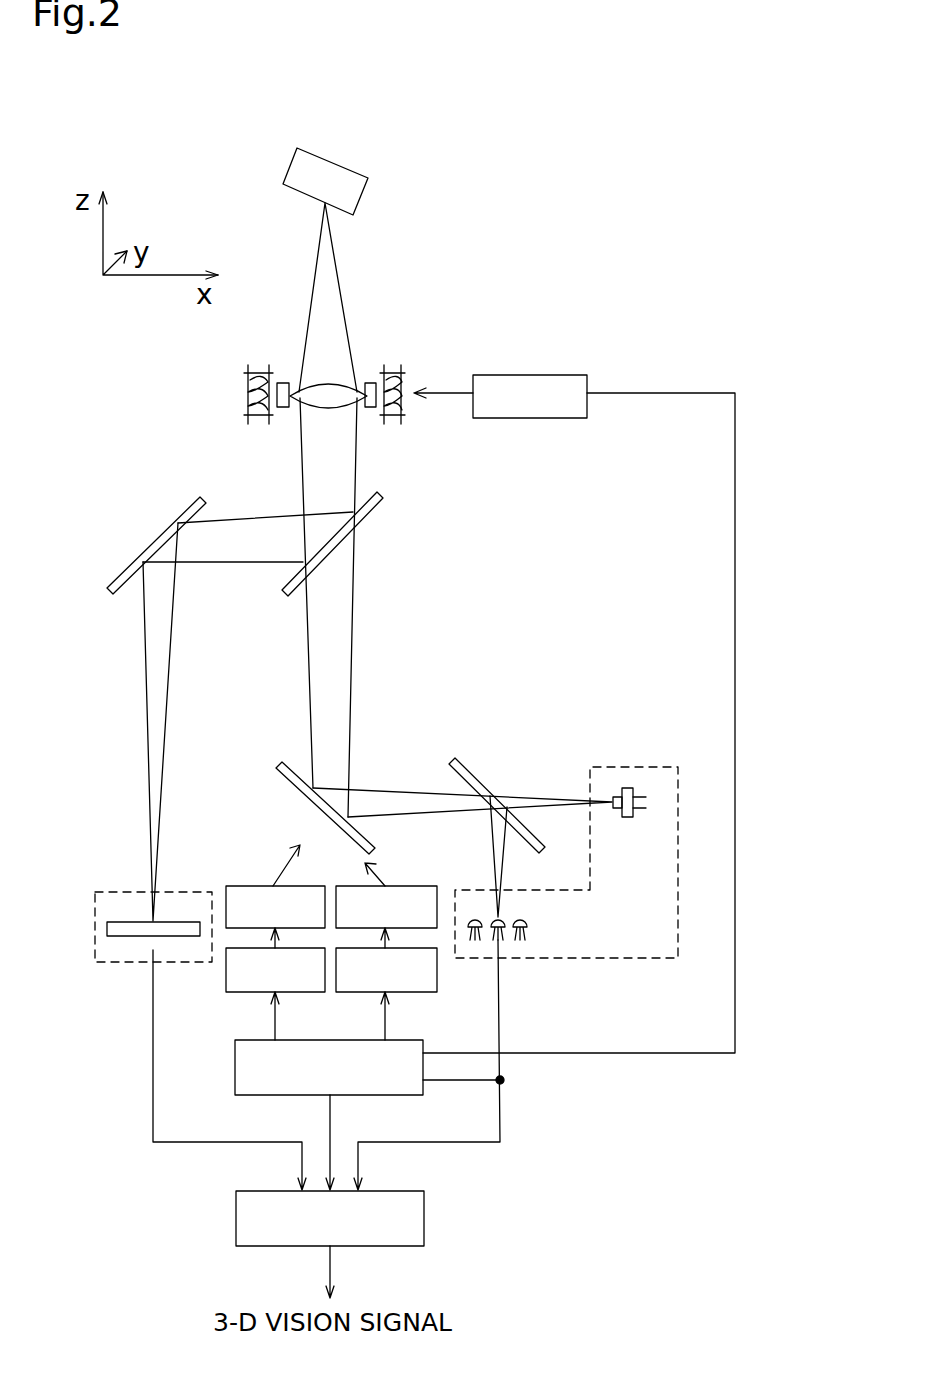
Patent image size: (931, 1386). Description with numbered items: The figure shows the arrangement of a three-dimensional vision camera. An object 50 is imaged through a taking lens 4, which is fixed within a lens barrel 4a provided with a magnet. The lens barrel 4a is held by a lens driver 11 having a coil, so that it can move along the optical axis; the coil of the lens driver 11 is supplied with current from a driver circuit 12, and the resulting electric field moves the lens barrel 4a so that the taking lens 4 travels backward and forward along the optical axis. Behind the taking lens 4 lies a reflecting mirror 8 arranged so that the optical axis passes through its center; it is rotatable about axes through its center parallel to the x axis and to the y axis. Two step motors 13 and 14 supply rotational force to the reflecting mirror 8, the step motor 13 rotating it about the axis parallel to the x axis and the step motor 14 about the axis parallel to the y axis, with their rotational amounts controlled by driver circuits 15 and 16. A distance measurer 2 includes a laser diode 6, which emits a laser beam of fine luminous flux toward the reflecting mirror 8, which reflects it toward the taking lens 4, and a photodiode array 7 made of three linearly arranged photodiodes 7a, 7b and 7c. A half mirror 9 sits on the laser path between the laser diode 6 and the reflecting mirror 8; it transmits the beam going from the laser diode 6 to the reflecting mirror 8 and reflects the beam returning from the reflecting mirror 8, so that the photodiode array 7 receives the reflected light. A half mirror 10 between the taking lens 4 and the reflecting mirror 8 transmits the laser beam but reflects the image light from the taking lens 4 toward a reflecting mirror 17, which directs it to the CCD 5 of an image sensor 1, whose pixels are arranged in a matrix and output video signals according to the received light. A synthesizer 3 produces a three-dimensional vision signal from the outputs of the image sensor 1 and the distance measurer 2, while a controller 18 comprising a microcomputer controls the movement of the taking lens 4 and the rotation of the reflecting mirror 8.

The image sensor 1 is at (95, 910).
The distance measurer 2 is at (678, 875).
The synthesizer 3 is at (424, 1218).
The taking lens 4 is at (340, 382).
The lens barrel 4a is at (371, 382).
The CCD 5 is at (125, 936).
The laser diode 6 is at (633, 785).
The photodiode array 7 is at (505, 921).
The photodiode 7a is at (476, 942).
The photodiode 7b is at (494, 915).
The photodiode 7c is at (518, 915).
The reflecting mirror 8 is at (297, 778).
The half mirror 9 is at (470, 762).
The half mirror 10 is at (370, 512).
The lens driver 11 is at (395, 420).
The driver circuit 12 is at (557, 375).
The step motor 13 is at (237, 886).
The step motor 14 is at (392, 886).
The driver circuit 15 is at (240, 992).
The driver circuit 16 is at (412, 992).
The reflecting mirror 17 is at (168, 525).
The controller 18 is at (235, 1073).
The object 50 is at (350, 172).